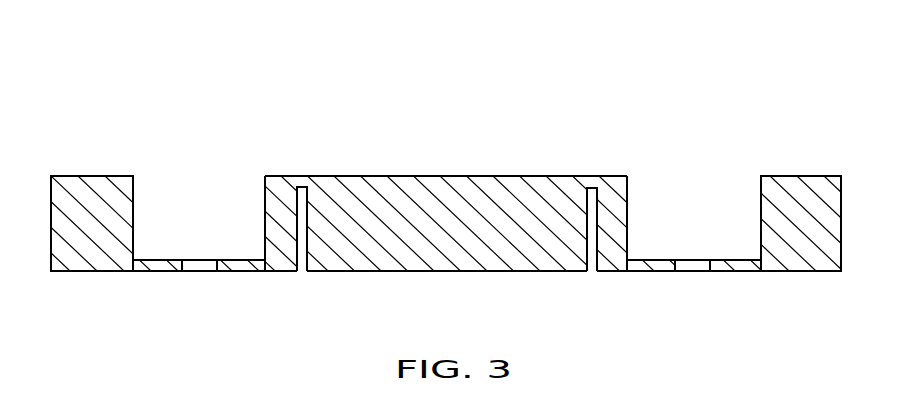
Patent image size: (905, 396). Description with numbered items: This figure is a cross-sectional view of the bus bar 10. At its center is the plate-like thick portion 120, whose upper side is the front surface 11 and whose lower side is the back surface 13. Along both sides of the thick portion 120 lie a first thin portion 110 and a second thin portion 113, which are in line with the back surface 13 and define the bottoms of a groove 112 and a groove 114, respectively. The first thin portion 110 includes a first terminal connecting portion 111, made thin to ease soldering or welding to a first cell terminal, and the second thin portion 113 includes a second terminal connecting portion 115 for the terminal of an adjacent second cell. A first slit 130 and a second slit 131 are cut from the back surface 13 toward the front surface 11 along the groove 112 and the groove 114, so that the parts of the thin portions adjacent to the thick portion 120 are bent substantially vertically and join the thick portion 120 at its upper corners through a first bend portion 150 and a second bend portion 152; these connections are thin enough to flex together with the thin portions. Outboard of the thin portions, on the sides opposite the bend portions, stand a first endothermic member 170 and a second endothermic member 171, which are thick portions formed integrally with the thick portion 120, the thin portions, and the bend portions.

The bus bar 10 is at (760, 94).
The front surface 11 is at (527, 176).
The back surface 13 is at (397, 272).
The first thin portion 110 is at (155, 260).
The first terminal connecting portion 111 is at (210, 268).
The groove 112 is at (176, 163).
The second thin portion 113 is at (645, 260).
The groove 114 is at (696, 165).
The second terminal connecting portion 115 is at (703, 268).
The thick portion 120 is at (364, 163).
The first slit 130 is at (302, 256).
The second slit 131 is at (591, 262).
The first bend portion 150 is at (265, 189).
The second bend portion 152 is at (627, 195).
The first endothermic member 170 is at (90, 176).
The second endothermic member 171 is at (805, 176).